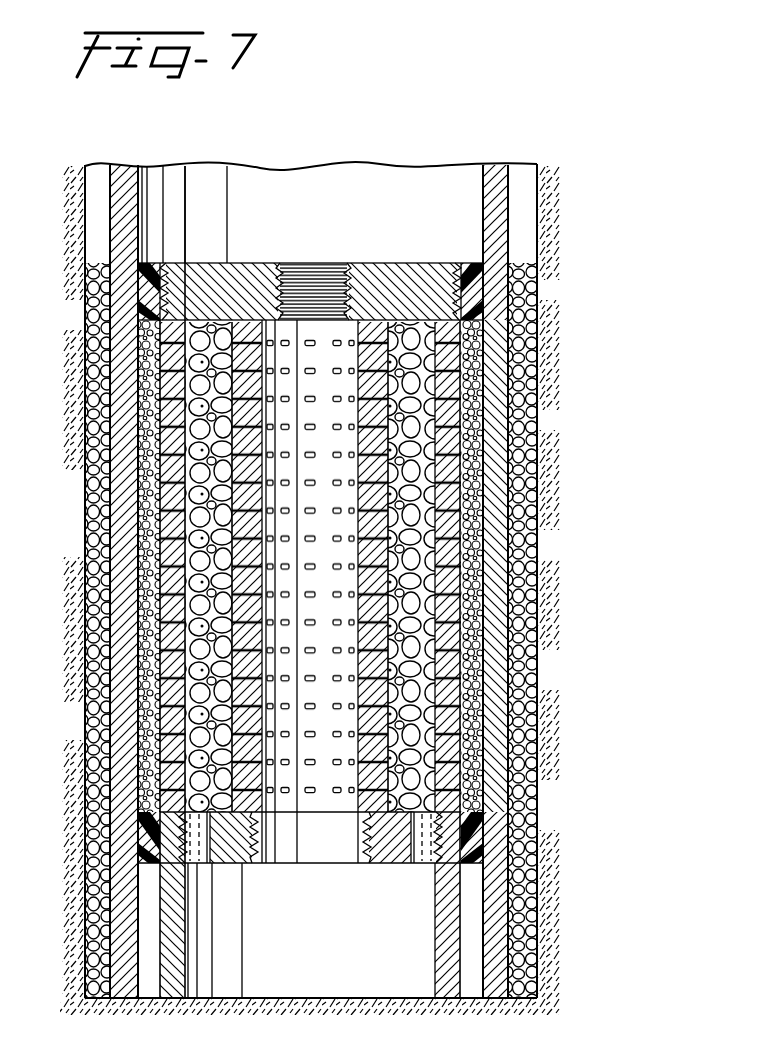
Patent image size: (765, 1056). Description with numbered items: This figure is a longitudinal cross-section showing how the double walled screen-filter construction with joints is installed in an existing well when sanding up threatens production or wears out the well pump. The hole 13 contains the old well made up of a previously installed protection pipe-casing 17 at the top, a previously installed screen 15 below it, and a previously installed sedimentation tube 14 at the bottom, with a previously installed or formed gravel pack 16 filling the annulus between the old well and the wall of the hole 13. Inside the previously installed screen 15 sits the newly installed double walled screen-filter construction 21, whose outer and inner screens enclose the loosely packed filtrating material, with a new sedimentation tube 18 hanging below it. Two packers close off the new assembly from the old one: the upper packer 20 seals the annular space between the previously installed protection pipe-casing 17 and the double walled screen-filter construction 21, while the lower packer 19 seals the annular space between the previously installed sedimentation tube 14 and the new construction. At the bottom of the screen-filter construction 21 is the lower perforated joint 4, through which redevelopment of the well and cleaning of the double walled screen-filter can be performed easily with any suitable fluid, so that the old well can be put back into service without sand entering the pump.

The lower perforated joint 4 is at (436, 848).
The hole 13 is at (537, 613).
The previously installed sedimentation tube 14 is at (508, 952).
The previously installed screen 15 is at (504, 545).
The previously installed or formed gravel pack 16 is at (520, 463).
The previously installed protection pipe-casing 17 is at (508, 210).
The new sedimentation tube 18 is at (461, 923).
The lower packer 19 is at (482, 815).
The upper packer 20 is at (483, 293).
The newly installed double walled screen-filter construction 21 is at (448, 353).